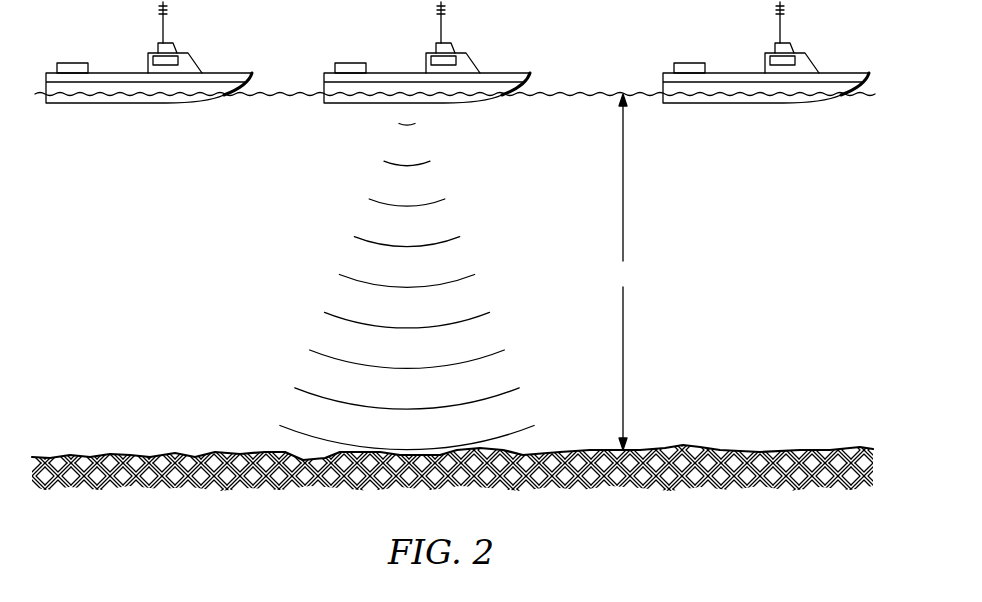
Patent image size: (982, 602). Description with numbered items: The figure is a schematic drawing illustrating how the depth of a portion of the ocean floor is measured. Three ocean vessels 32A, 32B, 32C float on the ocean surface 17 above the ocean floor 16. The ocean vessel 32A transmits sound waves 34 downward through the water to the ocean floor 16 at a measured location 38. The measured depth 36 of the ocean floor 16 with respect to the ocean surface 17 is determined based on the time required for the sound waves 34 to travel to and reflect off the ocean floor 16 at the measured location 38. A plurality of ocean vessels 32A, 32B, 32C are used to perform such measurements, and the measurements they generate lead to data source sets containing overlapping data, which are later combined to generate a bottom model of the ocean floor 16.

The ocean floor 16 is at (723, 449).
The ocean surface 17 is at (577, 93).
The ocean vessel 32A is at (395, 72).
The ocean vessel 32B is at (116, 72).
The ocean vessel 32C is at (734, 72).
The sound waves 34 is at (478, 252).
The measured depth 36 is at (624, 272).
The measured location 38 is at (247, 492).